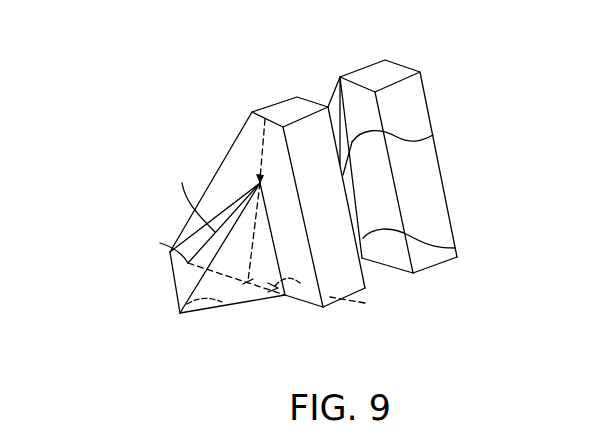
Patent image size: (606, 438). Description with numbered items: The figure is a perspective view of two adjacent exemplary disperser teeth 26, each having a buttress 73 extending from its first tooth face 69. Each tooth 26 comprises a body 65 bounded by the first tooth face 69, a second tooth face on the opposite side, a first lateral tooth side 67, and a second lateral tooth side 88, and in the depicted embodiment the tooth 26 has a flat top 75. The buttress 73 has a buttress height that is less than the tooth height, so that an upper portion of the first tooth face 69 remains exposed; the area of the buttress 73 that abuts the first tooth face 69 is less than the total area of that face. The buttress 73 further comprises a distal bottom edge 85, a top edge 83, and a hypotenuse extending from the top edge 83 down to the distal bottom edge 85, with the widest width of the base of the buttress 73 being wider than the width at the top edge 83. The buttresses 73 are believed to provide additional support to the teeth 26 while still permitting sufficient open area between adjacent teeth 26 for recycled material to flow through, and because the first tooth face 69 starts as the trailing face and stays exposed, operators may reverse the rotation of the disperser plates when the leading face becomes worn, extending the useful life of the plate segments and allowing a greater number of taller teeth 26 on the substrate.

The disperser tooth 26 is at (100, 117).
The body 65 is at (422, 73).
The first lateral tooth side 67 is at (433, 192).
The first tooth face 69 is at (252, 140).
The buttress 73 is at (456, 248).
The flat top 75 is at (290, 112).
The top edge 83 is at (402, 127).
The distal bottom edge 85 is at (178, 311).
The second lateral tooth side 88 is at (182, 242).